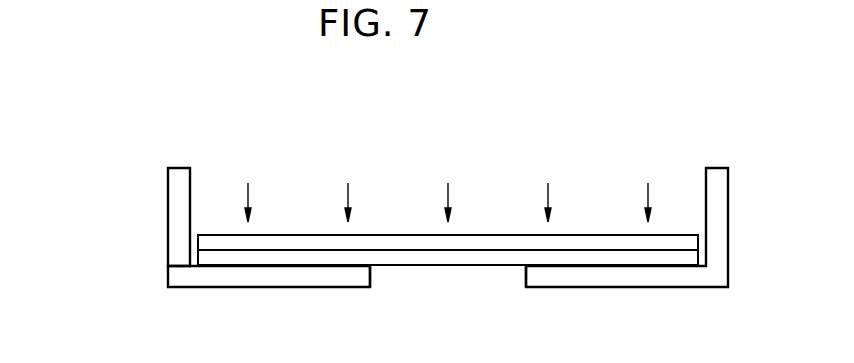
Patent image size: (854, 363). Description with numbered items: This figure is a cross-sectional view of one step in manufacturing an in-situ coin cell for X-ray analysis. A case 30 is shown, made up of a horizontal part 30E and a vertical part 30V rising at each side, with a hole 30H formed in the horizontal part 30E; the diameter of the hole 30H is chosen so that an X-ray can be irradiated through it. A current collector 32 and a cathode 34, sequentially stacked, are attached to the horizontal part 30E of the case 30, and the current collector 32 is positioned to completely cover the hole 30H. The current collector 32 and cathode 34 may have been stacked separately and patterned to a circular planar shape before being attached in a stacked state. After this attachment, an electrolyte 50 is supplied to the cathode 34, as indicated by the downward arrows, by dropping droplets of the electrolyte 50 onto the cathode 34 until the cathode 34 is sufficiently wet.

The case 30 is at (395, 250).
The vertical part 30V is at (168, 240).
The horizontal part 30E is at (207, 281).
The hole 30H is at (373, 278).
The current collector 32 is at (297, 257).
The cathode 34 is at (253, 243).
The electrolyte 50 is at (549, 193).